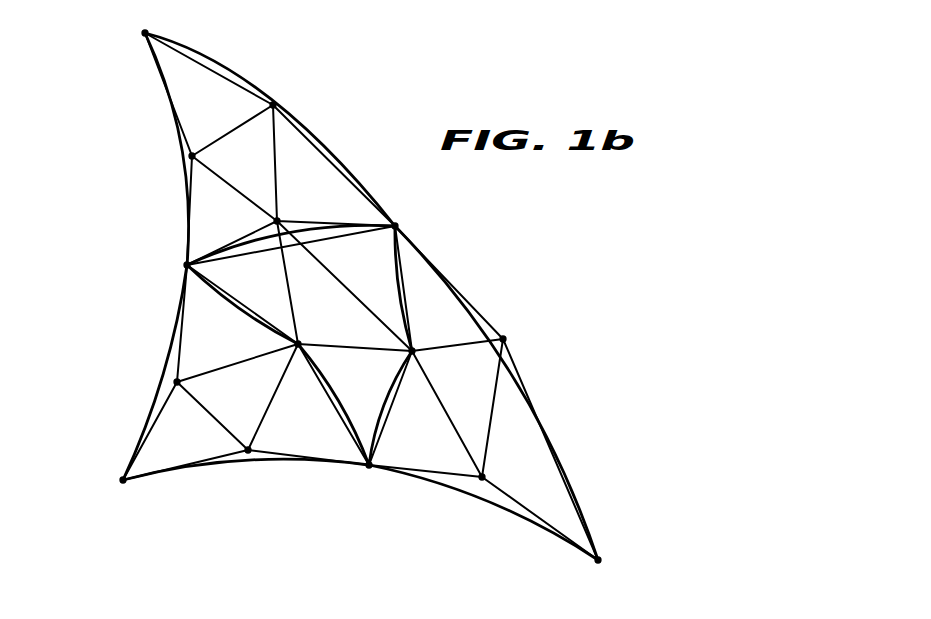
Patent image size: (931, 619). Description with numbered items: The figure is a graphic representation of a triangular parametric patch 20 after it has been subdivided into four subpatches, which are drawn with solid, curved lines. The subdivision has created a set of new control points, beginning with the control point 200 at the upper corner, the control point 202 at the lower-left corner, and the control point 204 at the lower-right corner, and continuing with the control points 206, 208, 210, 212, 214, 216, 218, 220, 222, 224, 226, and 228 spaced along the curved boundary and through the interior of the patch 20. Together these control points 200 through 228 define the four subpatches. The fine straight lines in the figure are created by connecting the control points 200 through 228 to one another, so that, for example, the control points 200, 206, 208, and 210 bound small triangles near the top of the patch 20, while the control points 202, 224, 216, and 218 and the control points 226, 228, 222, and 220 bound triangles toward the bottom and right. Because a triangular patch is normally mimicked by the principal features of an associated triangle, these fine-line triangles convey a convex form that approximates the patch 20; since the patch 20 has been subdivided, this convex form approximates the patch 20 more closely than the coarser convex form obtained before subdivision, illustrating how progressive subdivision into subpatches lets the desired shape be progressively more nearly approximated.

The patch 20 is at (186, 214).
The control point 200 is at (145, 33).
The control point 202 is at (123, 480).
The control point 204 is at (611, 574).
The control point 206 is at (273, 105).
The control point 208 is at (192, 156).
The control point 210 is at (277, 221).
The control point 212 is at (395, 226).
The control point 214 is at (187, 265).
The control point 216 is at (177, 382).
The control point 218 is at (298, 344).
The control point 220 is at (412, 351).
The control point 222 is at (503, 339).
The control point 224 is at (248, 450).
The control point 226 is at (369, 465).
The control point 228 is at (482, 477).